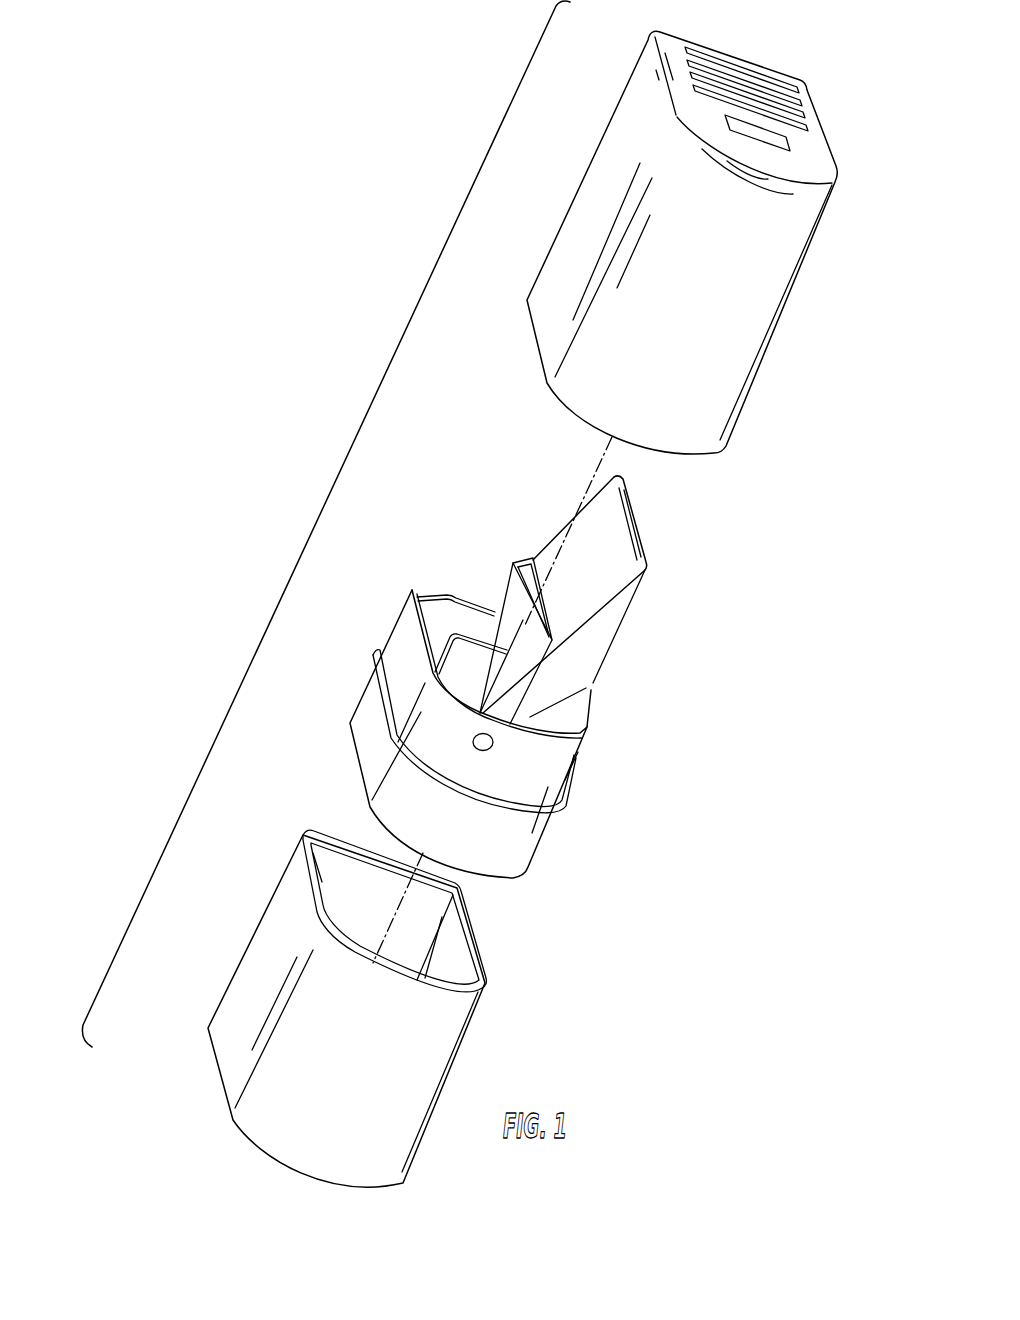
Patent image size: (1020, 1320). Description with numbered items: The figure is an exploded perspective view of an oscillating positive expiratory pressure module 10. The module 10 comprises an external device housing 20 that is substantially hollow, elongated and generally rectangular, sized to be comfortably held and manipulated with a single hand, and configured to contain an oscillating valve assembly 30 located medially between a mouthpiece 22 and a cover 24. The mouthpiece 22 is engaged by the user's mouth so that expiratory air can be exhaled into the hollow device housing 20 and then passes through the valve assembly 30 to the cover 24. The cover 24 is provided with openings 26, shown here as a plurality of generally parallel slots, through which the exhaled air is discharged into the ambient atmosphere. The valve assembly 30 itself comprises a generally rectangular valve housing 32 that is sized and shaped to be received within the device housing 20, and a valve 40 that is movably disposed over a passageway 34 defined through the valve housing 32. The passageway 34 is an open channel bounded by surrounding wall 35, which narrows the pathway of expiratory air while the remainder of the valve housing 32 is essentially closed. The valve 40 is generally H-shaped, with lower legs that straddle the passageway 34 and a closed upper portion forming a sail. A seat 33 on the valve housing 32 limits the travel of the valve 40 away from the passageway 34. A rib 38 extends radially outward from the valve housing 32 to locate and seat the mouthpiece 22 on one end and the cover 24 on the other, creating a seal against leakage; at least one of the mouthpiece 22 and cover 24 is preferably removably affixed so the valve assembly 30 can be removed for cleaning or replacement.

The oscillating PEP module 10 is at (332, 490).
The device housing 20 is at (783, 315).
The mouthpiece 22 is at (272, 928).
The cover 24 is at (592, 214).
The openings 26 is at (780, 140).
The oscillating valve assembly 30 is at (441, 525).
The valve housing 32 is at (407, 633).
The seat 33 is at (573, 708).
The passageway 34 is at (530, 597).
The wall 35 is at (505, 597).
The rib 38 is at (560, 813).
The valve 40 is at (615, 603).